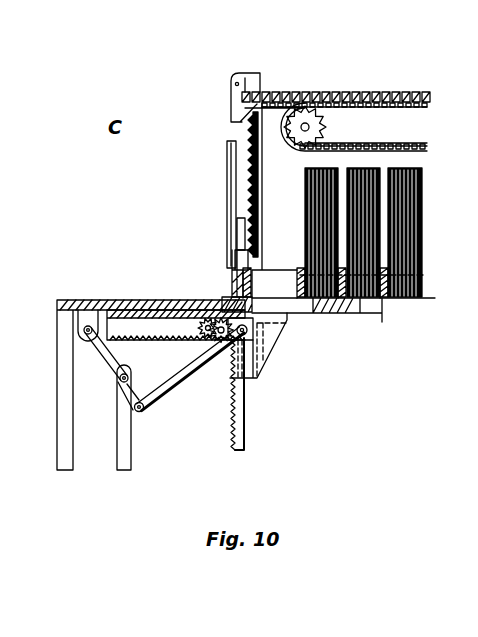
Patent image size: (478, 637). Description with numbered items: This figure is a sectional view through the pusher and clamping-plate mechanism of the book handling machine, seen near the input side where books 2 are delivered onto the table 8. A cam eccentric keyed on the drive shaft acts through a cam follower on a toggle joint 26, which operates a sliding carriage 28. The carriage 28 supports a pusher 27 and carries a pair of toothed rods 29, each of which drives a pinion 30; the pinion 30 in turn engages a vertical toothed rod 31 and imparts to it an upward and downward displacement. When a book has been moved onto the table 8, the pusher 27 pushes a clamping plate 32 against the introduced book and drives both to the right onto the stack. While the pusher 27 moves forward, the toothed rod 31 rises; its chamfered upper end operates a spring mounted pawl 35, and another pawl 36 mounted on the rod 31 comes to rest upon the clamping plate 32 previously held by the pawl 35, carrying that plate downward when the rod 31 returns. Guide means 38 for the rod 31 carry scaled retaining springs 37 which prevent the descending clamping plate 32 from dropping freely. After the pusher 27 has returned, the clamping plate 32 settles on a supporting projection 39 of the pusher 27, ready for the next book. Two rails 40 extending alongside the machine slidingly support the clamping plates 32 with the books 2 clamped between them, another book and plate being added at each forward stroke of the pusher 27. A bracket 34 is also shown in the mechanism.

The books 2 is at (408, 218).
The table 8 is at (88, 300).
The toggle joint 26 is at (170, 394).
The pusher 27 is at (232, 296).
The sliding carriage 28 is at (140, 312).
The toothed rods 29 is at (160, 337).
The pinion 30 is at (206, 318).
The toothed rod 31 is at (242, 413).
The clamping plate 32 is at (268, 92).
The bracket 34 is at (240, 262).
The spring mounted pawl 35 is at (234, 98).
The pawl 36 is at (240, 236).
The scaled retaining springs 37 is at (250, 135).
The guide means 38 is at (232, 165).
The supporting projection 39 is at (255, 301).
The rails 40 is at (268, 288).